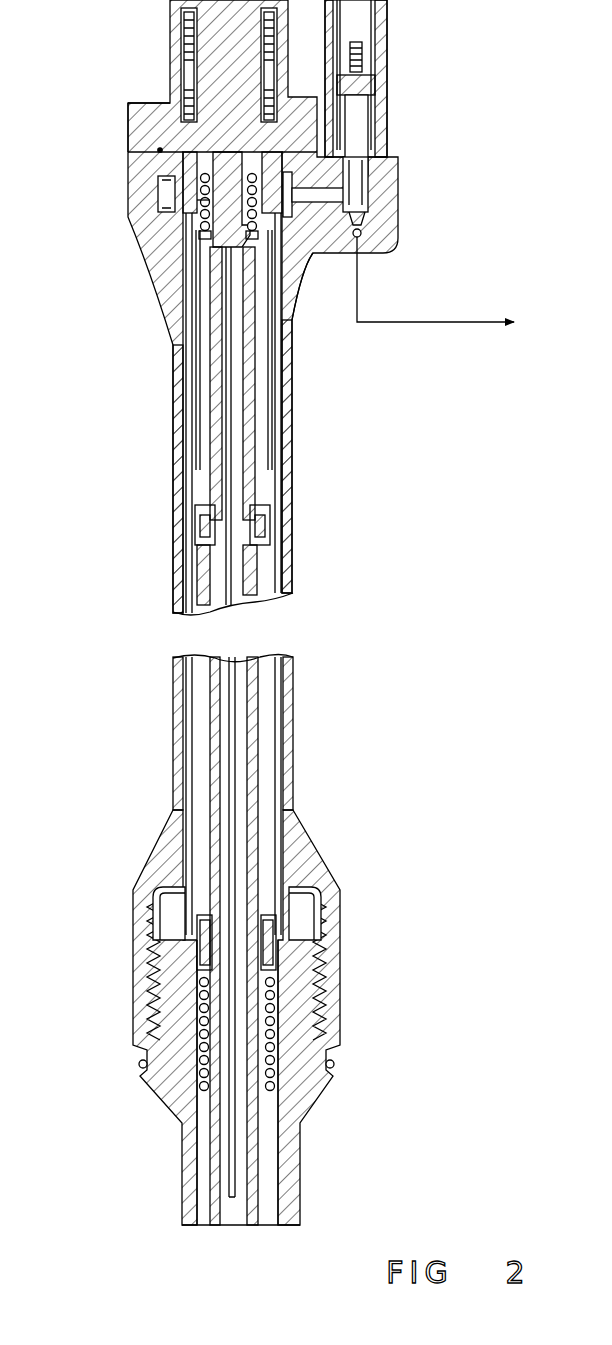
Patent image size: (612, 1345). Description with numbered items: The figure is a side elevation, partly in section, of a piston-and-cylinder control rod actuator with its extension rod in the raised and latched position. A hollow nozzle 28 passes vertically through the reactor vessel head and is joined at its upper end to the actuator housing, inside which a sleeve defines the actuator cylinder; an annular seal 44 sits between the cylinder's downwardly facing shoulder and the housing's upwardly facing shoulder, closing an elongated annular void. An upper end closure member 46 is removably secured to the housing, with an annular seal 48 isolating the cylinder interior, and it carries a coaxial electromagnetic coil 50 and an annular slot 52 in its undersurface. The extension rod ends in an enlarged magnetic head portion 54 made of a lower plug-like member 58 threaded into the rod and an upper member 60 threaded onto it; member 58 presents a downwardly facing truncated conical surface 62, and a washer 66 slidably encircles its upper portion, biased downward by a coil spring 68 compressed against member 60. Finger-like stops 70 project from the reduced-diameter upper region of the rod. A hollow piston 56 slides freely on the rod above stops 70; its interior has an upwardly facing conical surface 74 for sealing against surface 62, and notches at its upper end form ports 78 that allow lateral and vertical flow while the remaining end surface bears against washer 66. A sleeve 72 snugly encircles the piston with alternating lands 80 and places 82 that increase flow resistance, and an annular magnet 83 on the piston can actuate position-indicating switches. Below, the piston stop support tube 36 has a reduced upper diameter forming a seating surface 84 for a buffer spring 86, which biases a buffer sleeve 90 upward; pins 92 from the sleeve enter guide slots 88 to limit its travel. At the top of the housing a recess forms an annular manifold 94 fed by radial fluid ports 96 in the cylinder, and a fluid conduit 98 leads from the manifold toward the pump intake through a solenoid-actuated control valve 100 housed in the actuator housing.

The nozzle 28 is at (298, 1165).
The piston stop support tube 36 is at (205, 1140).
The annular seal 44 is at (203, 230).
The upper end closure member 46 is at (140, 103).
The annular seal 48 is at (160, 148).
The electromagnetic coil 50 is at (185, 68).
The annular slot 52 is at (258, 128).
The head portion 54 is at (178, 208).
The piston 56 is at (198, 300).
The lower plug-like member 58 is at (212, 330).
The upper member 60 is at (262, 152).
The truncated conical surface 62 is at (255, 240).
The washer 66 is at (205, 233).
The coil spring 68 is at (205, 178).
The stops 70 is at (272, 505).
The sleeve 72 is at (258, 447).
The conical surface 74 is at (283, 240).
The ports 78 is at (178, 296).
The lands 80 is at (190, 465).
The places 82 is at (188, 484).
The annular magnet 83 is at (192, 523).
The seating surface 84 is at (275, 1085).
The buffer spring 86 is at (205, 1030).
The guide slots 88 is at (197, 975).
The buffer sleeve 90 is at (205, 930).
The pins 92 is at (268, 940).
The annular manifold 94 is at (204, 202).
The fluid ports 96 is at (162, 190).
The fluid conduit 98 is at (358, 275).
The control valve 100 is at (383, 83).